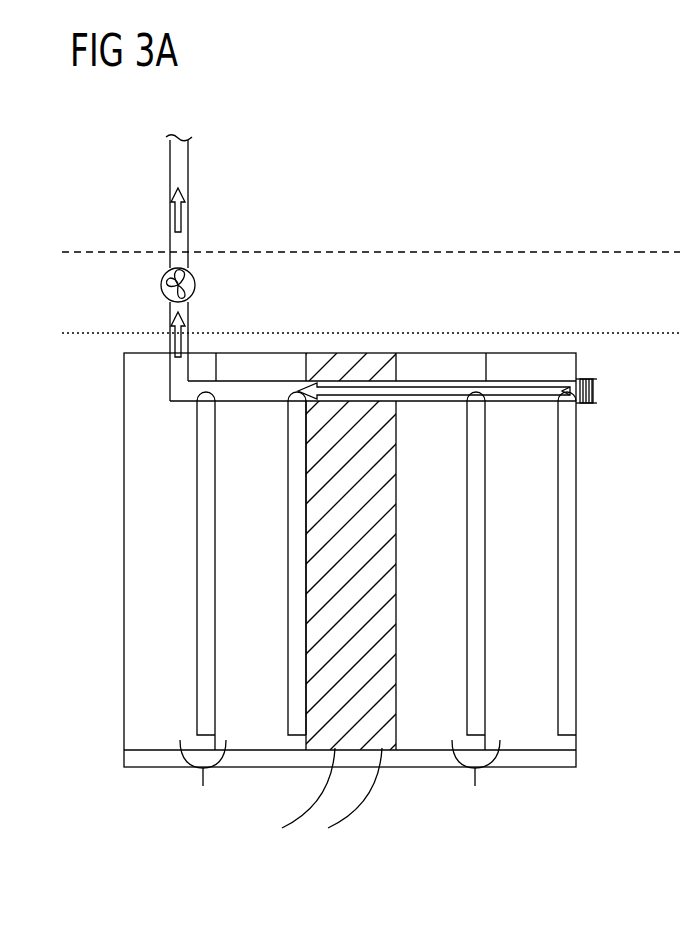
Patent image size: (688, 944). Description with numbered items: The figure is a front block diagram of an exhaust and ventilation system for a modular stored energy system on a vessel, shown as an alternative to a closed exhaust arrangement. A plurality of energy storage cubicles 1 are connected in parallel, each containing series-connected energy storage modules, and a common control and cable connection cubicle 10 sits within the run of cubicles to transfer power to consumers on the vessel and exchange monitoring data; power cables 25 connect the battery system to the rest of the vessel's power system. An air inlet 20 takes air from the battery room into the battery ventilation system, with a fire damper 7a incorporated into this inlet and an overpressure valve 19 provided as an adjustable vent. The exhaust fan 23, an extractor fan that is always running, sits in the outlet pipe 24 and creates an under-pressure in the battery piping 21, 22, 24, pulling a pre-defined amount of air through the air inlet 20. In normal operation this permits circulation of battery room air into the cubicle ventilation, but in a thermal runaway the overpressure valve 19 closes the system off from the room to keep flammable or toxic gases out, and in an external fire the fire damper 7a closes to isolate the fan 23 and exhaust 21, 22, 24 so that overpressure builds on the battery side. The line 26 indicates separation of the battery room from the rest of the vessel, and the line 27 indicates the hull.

The energy storage cubicle 1 is at (340, 783).
The fire damper 7a is at (610, 390).
The control and cable connection cubicle 10 is at (347, 362).
The overpressure valve 19 is at (569, 406).
The air inlet 20 is at (590, 364).
The battery piping 21 is at (293, 490).
The battery piping 22 is at (246, 402).
The exhaust fan 23 is at (197, 284).
The outlet pipe 24 is at (182, 151).
The power cables 25 is at (300, 798).
The line indicating separation of battery room 26 is at (508, 332).
The line indicating hull 27 is at (472, 251).